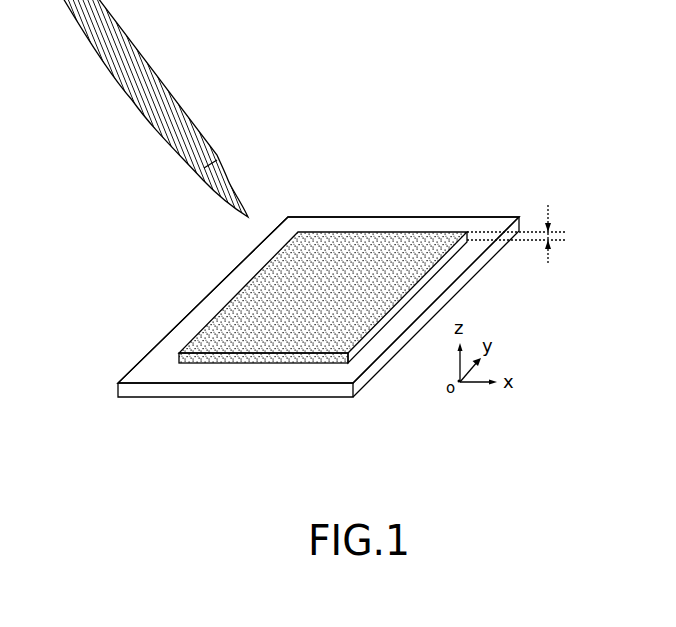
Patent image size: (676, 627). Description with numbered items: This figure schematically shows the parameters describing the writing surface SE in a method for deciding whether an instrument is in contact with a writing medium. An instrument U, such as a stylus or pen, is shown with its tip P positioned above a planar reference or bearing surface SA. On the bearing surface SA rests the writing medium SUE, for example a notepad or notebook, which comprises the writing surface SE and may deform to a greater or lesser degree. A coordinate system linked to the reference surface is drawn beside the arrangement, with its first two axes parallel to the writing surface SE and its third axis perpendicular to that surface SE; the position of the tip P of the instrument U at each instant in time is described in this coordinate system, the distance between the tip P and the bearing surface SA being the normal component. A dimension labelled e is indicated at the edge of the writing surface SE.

The instrument U is at (172, 88).
The tip P is at (249, 217).
The writing surface SE is at (290, 297).
The bearing surface SA is at (238, 385).
The writing medium SUE is at (373, 333).
The thickness of sensing element e is at (528, 235).